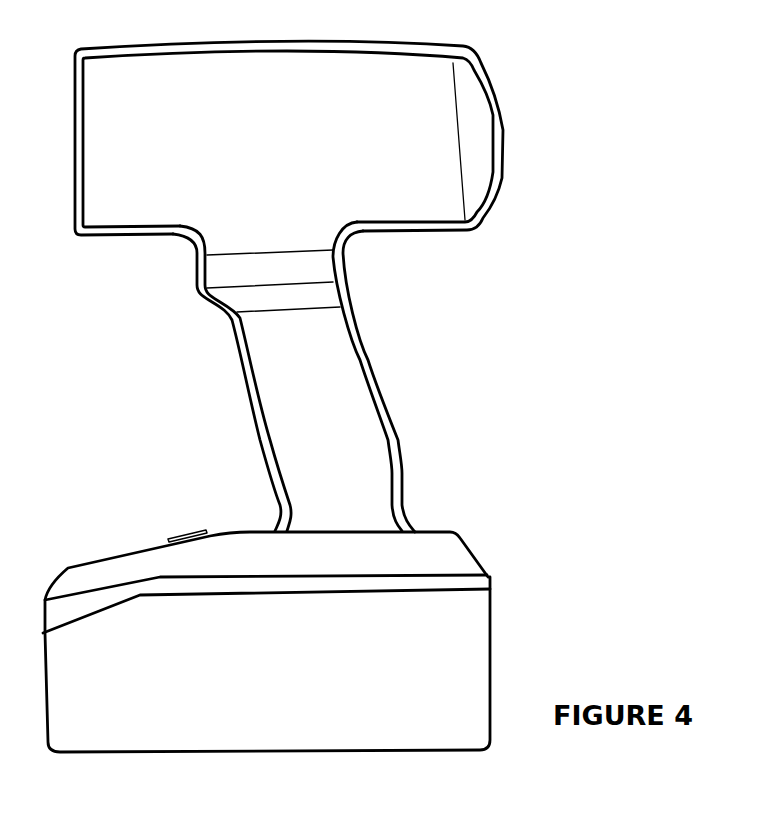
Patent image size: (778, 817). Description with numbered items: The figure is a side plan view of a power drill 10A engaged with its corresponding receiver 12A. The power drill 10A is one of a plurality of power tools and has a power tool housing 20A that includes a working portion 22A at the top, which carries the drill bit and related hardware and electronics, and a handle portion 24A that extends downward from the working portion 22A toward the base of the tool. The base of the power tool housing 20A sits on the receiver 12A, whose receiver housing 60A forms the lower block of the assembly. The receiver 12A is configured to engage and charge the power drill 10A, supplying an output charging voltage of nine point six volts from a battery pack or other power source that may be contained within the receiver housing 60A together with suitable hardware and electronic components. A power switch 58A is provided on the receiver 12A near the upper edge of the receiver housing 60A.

The power drill 10A is at (317, 383).
The working portion 22A is at (170, 42).
The power tool housing 20A is at (505, 132).
The handle portion 24A is at (383, 410).
The power switch 58A is at (187, 538).
The receiver 12A is at (317, 629).
The receiver housing 60A is at (492, 662).